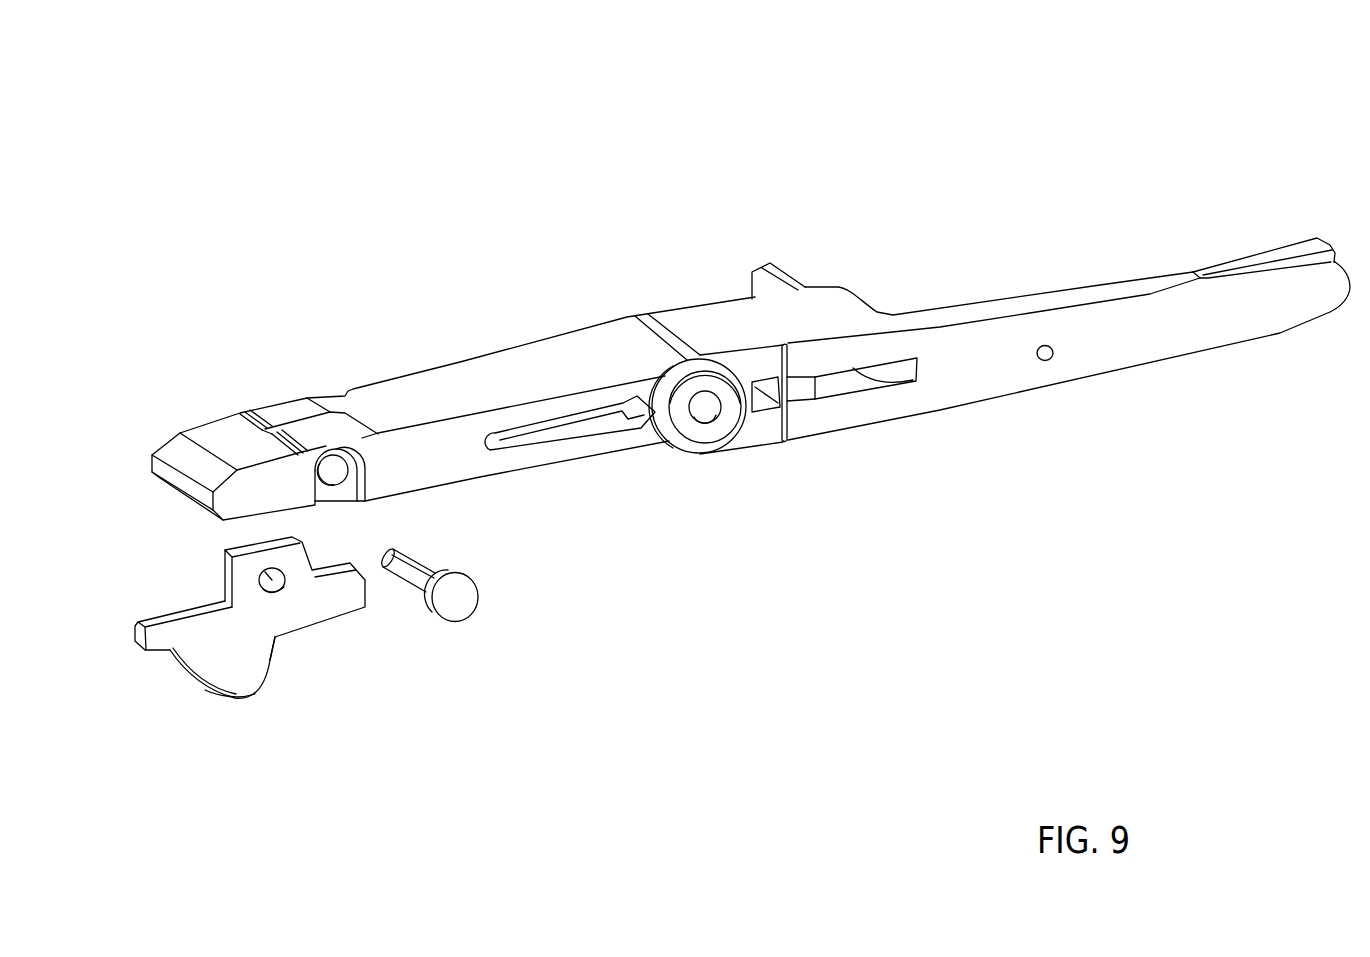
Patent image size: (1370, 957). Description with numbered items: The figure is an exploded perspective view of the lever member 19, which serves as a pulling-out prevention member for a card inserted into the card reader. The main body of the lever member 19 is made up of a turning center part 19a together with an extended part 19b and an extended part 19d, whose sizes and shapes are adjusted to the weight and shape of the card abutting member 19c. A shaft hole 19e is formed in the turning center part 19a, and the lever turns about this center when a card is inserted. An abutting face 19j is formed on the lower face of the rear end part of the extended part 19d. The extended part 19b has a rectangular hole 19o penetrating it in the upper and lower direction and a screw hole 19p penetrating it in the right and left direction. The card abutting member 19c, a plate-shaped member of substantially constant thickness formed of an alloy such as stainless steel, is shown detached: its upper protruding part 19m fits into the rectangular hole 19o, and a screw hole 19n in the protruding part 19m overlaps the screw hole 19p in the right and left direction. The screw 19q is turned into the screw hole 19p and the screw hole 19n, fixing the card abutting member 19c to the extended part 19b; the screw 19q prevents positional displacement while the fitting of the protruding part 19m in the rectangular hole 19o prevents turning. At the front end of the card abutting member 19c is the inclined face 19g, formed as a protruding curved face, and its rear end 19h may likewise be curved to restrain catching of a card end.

The lever member 19 is at (1210, 121).
The turning center part 19a is at (628, 316).
The extended part 19b is at (396, 378).
The card abutting member 19c is at (246, 702).
The extended part 19d is at (1100, 285).
The shaft hole 19e is at (701, 396).
The inclined face 19g is at (188, 680).
The rear end 19h is at (275, 660).
The abutting face 19j is at (1323, 318).
The protruding part 19m is at (225, 580).
The screw hole 19n is at (283, 583).
The rectangular hole 19o is at (278, 430).
The screw hole 19p is at (332, 480).
The screw 19q is at (460, 625).